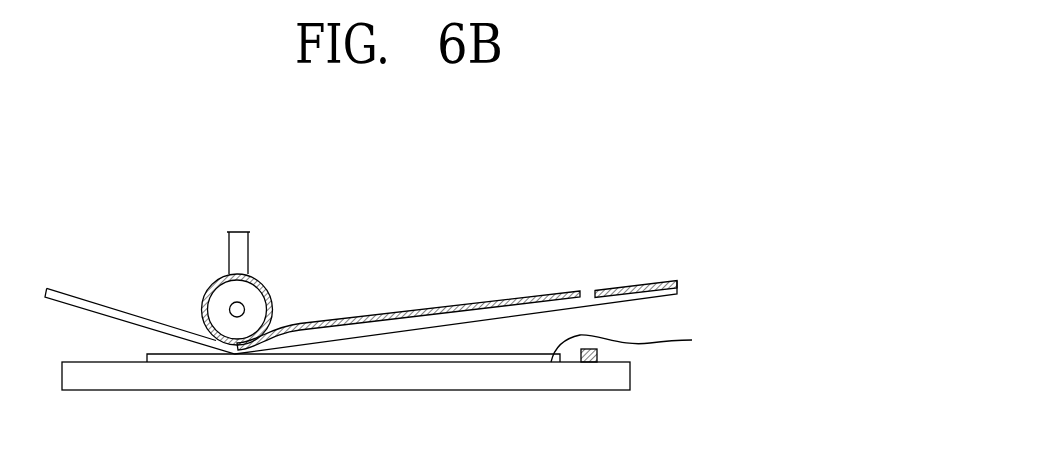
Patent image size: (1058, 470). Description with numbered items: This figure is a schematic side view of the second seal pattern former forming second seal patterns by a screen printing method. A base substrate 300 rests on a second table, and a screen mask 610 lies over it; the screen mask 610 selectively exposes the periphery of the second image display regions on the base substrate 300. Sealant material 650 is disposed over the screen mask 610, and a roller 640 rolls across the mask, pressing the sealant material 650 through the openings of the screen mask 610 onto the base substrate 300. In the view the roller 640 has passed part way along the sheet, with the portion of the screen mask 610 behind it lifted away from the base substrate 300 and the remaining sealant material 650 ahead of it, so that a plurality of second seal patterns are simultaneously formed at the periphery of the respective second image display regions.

The base substrate 300 is at (617, 382).
The screen mask 610 is at (678, 292).
The sealant material 650 is at (643, 281).
The roller 640 is at (250, 298).